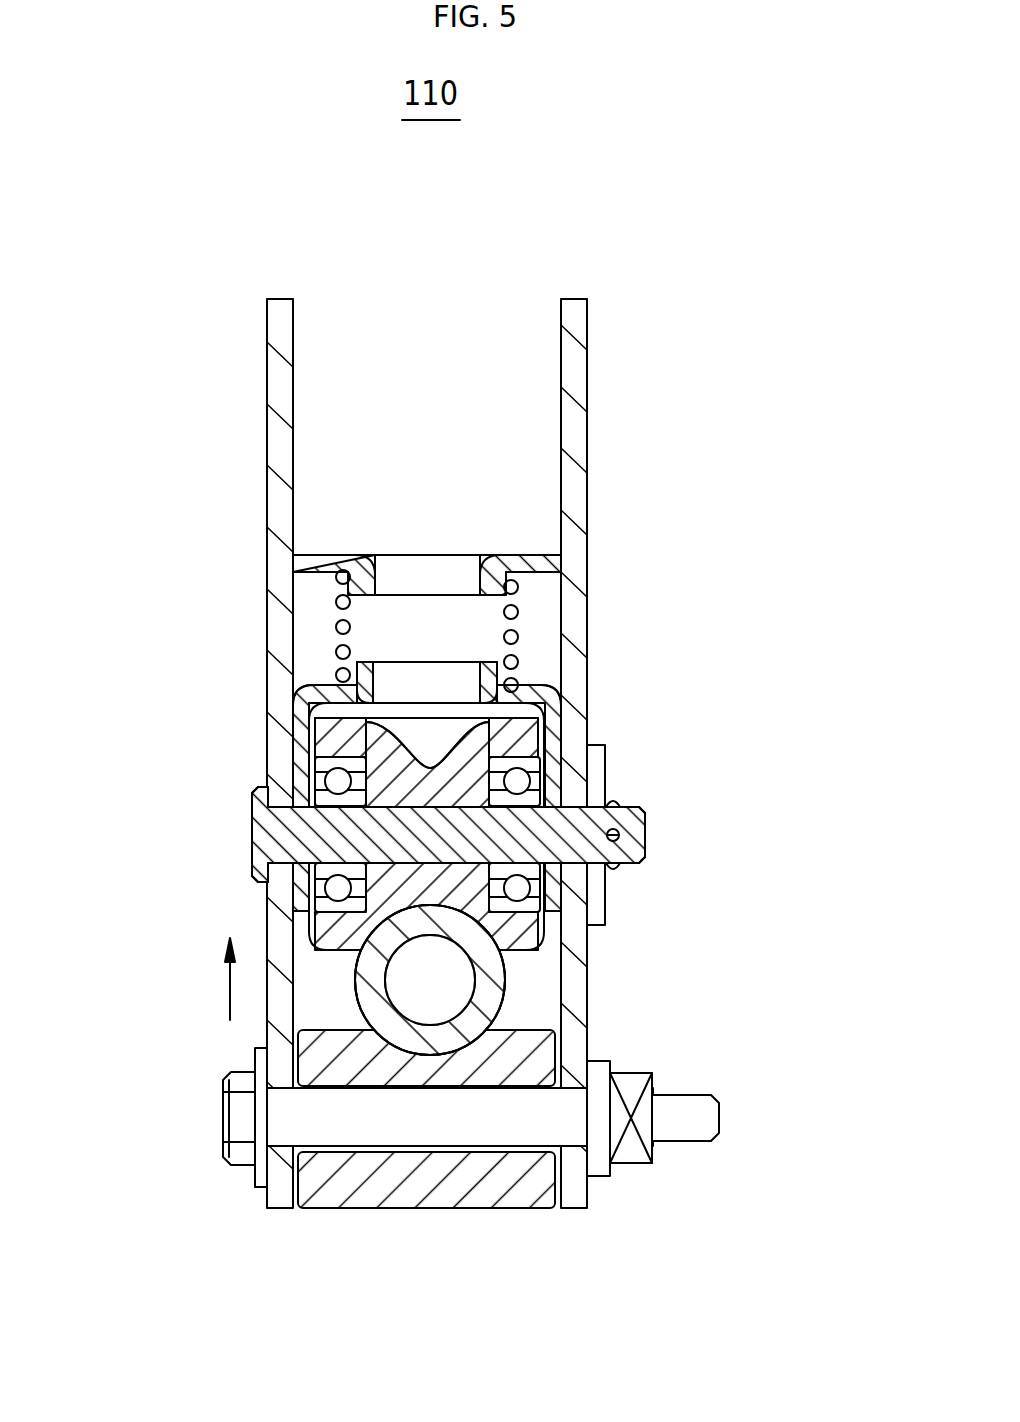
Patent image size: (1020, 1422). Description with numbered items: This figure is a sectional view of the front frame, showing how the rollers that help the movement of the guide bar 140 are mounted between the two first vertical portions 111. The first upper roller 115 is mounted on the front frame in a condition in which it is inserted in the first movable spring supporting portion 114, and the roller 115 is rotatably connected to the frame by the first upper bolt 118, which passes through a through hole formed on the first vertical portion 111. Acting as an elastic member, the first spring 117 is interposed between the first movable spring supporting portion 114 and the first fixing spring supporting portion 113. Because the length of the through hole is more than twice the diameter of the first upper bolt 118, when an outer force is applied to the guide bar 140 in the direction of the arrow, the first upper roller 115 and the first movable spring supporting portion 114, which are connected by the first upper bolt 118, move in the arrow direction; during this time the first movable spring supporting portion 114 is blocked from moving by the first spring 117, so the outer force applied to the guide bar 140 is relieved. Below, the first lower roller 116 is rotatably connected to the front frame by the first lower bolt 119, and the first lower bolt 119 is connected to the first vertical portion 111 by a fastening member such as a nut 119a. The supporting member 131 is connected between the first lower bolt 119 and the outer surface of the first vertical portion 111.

The first vertical portion 111 is at (573, 355).
The first fixing spring supporting portion 113 is at (530, 557).
The first movable spring supporting portion 114 is at (330, 690).
The first upper roller 115 is at (428, 768).
The first lower roller 116 is at (421, 1157).
The first spring 117 is at (512, 637).
The first upper bolt 118 is at (263, 826).
The first lower bolt 119 is at (233, 1118).
The nut 119a is at (647, 1077).
The supporting member 131 is at (262, 1178).
The guide bar 140 is at (490, 975).